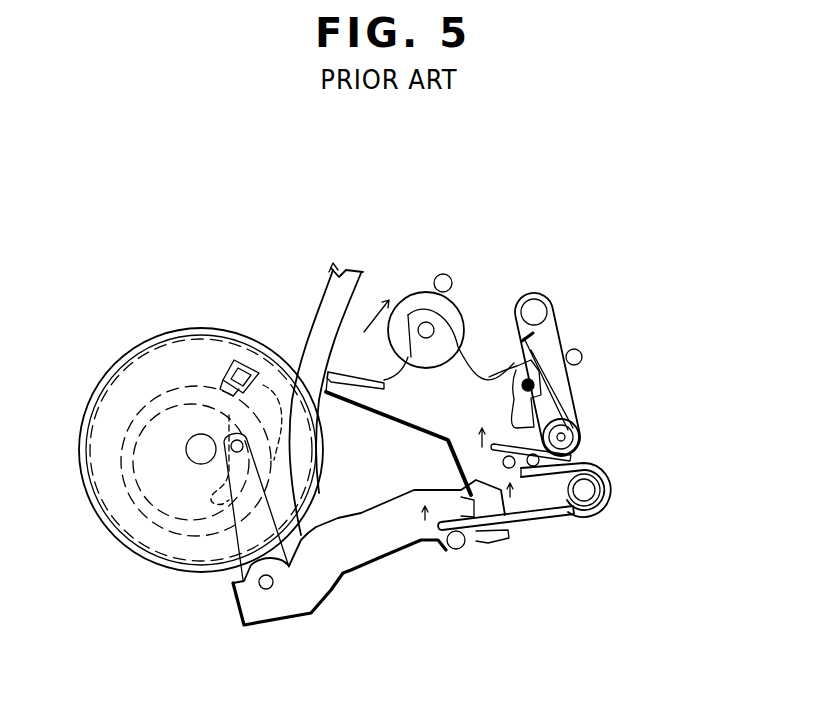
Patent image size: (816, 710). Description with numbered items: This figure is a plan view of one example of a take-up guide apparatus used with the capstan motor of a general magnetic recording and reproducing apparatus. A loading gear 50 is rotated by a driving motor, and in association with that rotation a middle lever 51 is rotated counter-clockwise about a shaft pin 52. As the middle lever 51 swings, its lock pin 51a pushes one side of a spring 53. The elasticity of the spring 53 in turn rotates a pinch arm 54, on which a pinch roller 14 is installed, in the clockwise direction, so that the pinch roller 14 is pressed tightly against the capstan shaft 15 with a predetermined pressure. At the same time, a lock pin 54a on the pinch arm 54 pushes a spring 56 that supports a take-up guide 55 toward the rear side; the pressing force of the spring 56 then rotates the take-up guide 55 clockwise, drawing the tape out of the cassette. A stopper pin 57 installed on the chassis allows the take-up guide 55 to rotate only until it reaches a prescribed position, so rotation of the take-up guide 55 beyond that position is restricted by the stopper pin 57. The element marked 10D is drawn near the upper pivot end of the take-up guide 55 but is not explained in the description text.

The loading gear 50 is at (147, 355).
The shaft pin 52 is at (258, 588).
The middle lever 51 is at (243, 640).
The lock pin 51a is at (457, 550).
The pinch arm 54 is at (407, 412).
The lock pin 54a is at (562, 513).
The pinch roller 14 is at (415, 298).
The capstan shaft 15 is at (442, 280).
The arm pivot 10D is at (533, 303).
The take-up guide 55 is at (547, 332).
The stopper pin 57 is at (581, 356).
The spring 56 is at (572, 415).
The spring 53 is at (535, 480).